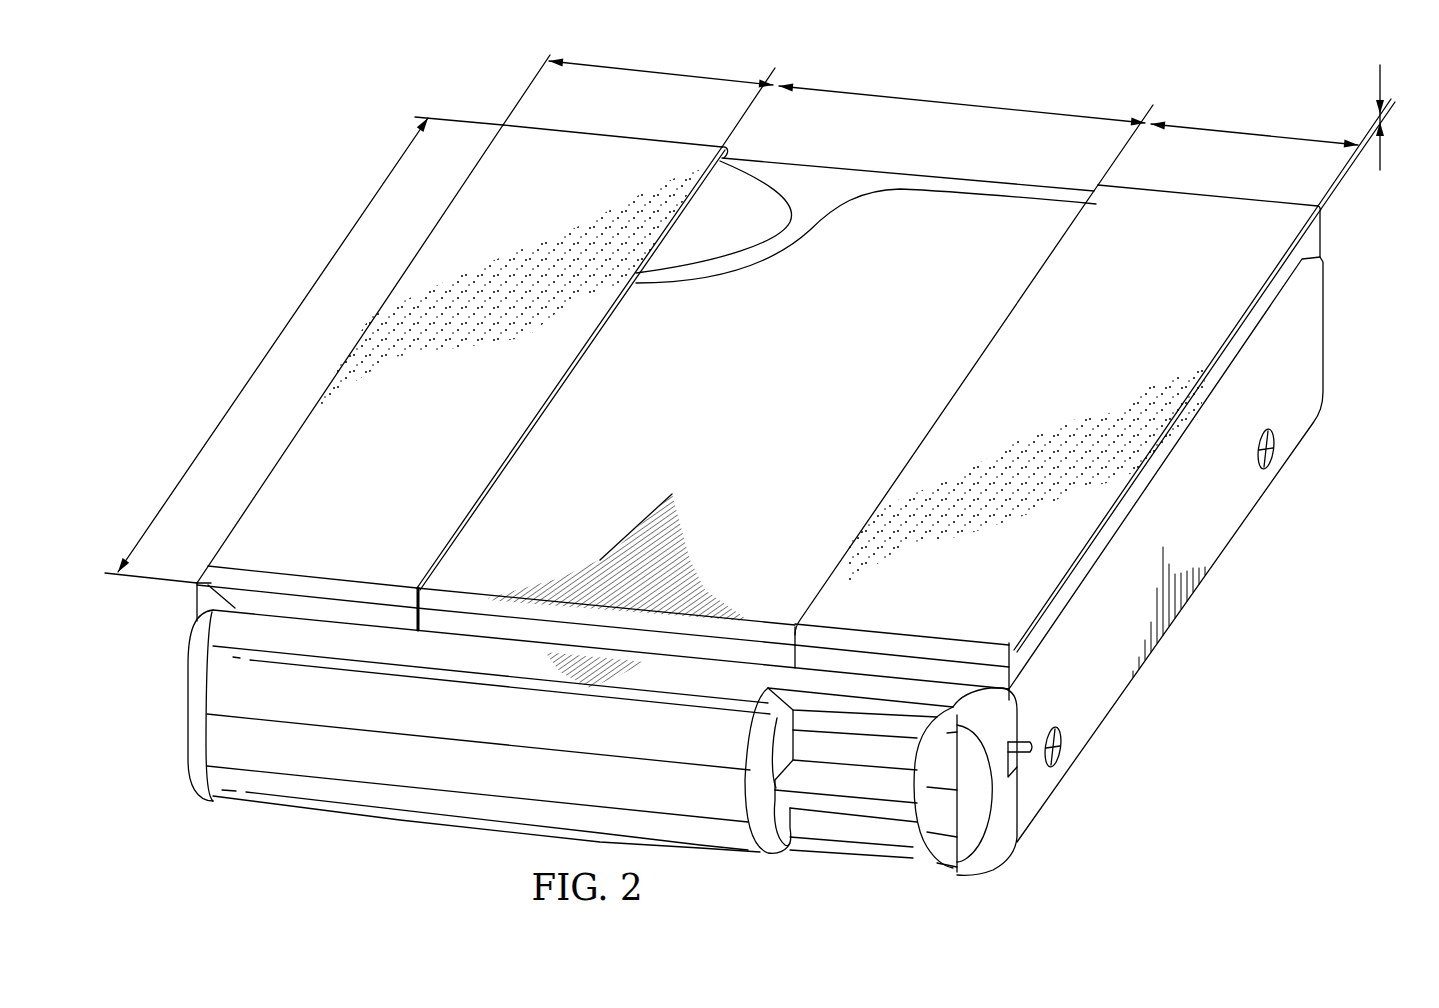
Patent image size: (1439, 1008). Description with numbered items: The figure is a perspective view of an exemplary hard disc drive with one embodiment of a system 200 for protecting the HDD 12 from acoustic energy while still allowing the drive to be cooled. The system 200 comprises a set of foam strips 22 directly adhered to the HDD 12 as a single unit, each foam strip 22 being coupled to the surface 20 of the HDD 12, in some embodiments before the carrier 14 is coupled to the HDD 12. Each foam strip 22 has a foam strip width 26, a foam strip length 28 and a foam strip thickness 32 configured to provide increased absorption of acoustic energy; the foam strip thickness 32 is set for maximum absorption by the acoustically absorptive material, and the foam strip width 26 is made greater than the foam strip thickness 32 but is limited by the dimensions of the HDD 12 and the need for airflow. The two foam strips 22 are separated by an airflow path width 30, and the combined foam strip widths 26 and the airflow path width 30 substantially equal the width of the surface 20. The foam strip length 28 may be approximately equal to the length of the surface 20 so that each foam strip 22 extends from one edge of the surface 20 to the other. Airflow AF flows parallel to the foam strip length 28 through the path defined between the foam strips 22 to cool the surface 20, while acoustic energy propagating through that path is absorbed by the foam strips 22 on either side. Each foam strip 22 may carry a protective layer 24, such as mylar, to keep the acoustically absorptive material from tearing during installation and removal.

The system for protecting hard disc drive from acoustic energy 200 is at (309, 132).
The hard disc drive (HDD) 12 is at (817, 178).
The carrier 14 is at (1236, 524).
The surface of HDD 20 is at (982, 229).
The foam strip 22 is at (596, 148).
The protective layer 24 is at (420, 410).
The foam strip width 26 is at (657, 61).
The foam strip length 28 is at (271, 346).
The airflow path width 30 is at (955, 103).
The foam strip thickness 32 is at (1382, 73).
The airflow AF is at (904, 151).